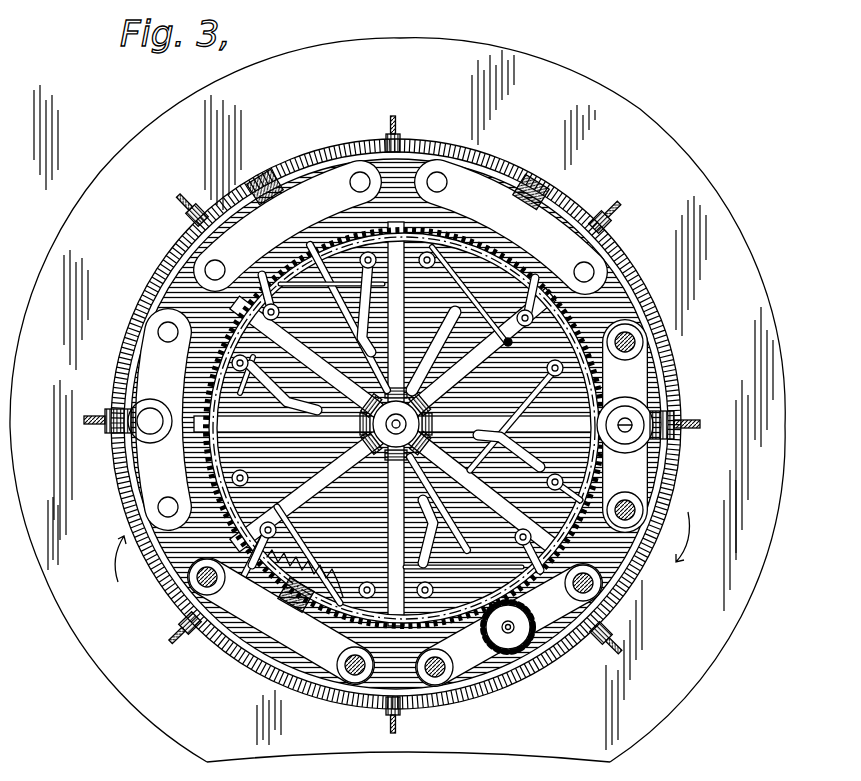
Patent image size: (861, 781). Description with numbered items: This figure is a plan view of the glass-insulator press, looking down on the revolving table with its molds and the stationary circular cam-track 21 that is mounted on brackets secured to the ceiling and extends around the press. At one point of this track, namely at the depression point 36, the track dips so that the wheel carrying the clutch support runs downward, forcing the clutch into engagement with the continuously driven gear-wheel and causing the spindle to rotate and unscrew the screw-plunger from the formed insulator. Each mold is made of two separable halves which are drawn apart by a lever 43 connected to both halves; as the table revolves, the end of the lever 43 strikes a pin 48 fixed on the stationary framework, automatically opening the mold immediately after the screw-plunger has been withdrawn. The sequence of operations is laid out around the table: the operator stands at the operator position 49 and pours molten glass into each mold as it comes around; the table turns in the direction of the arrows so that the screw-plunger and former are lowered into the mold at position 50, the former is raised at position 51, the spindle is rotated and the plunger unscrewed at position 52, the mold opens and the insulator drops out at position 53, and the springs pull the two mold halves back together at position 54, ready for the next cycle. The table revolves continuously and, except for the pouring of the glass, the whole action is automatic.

The cam-track 21 is at (150, 300).
The depression point 36 is at (288, 172).
The lever 43 is at (480, 327).
The pin 48 is at (407, 347).
The operator position 49 is at (509, 629).
The position 50 is at (281, 629).
The position 51 is at (128, 424).
The position 52 is at (228, 193).
The position 53 is at (540, 180).
The position 54 is at (657, 426).